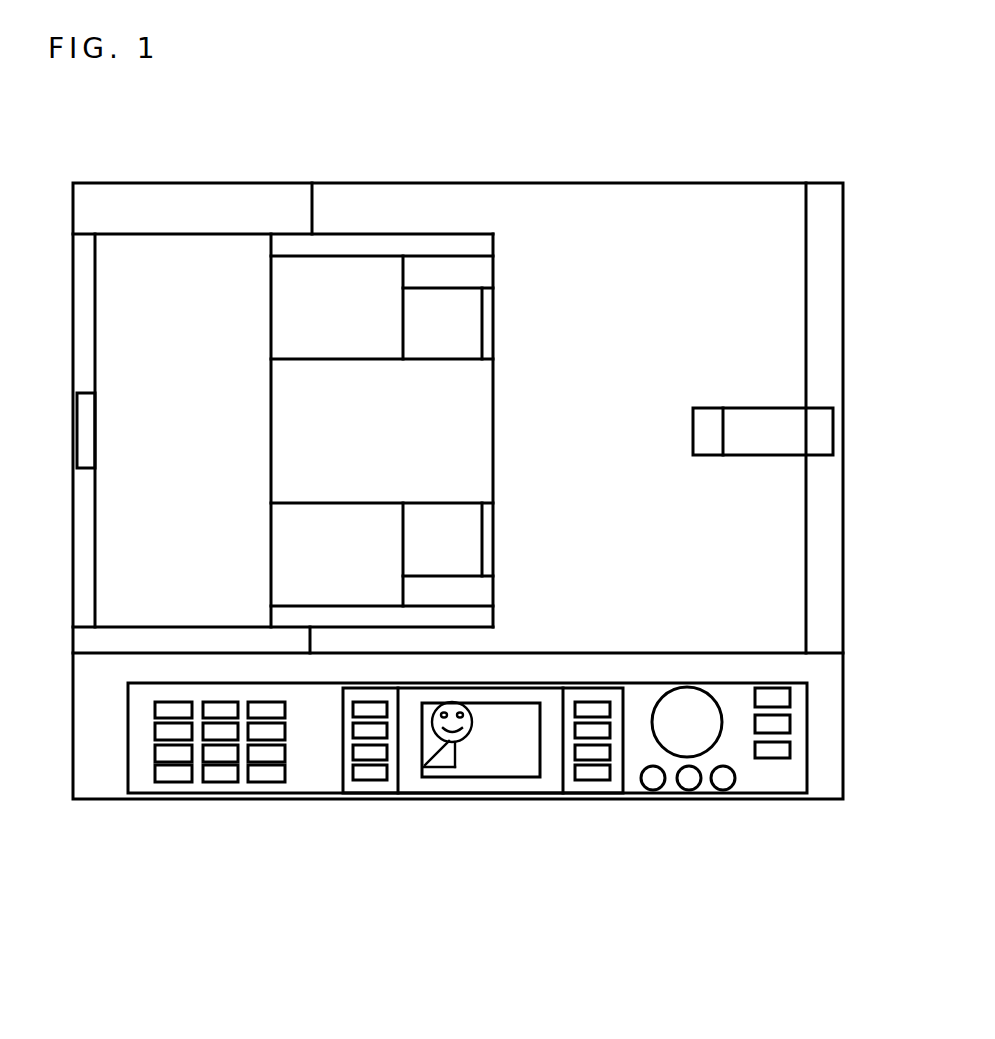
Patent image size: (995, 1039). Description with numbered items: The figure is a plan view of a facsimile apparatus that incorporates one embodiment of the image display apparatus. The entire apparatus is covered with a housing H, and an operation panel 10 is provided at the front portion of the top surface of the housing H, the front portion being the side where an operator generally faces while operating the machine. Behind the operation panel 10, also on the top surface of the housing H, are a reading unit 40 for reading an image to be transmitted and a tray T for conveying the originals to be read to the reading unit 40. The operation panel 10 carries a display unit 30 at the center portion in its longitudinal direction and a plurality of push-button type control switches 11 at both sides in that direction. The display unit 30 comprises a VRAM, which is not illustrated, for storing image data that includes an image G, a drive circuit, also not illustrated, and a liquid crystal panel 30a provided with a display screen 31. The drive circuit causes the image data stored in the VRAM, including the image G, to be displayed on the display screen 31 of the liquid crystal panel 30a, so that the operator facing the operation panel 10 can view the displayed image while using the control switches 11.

The operation panel 10 is at (112, 792).
The push-button type control switches 11 is at (197, 786).
The display unit 30 is at (507, 692).
The liquid crystal panel 30a is at (540, 692).
The display screen 31 is at (511, 771).
The reading unit 40 is at (137, 195).
The tray T is at (505, 237).
The housing H is at (850, 627).
The image G is at (483, 768).